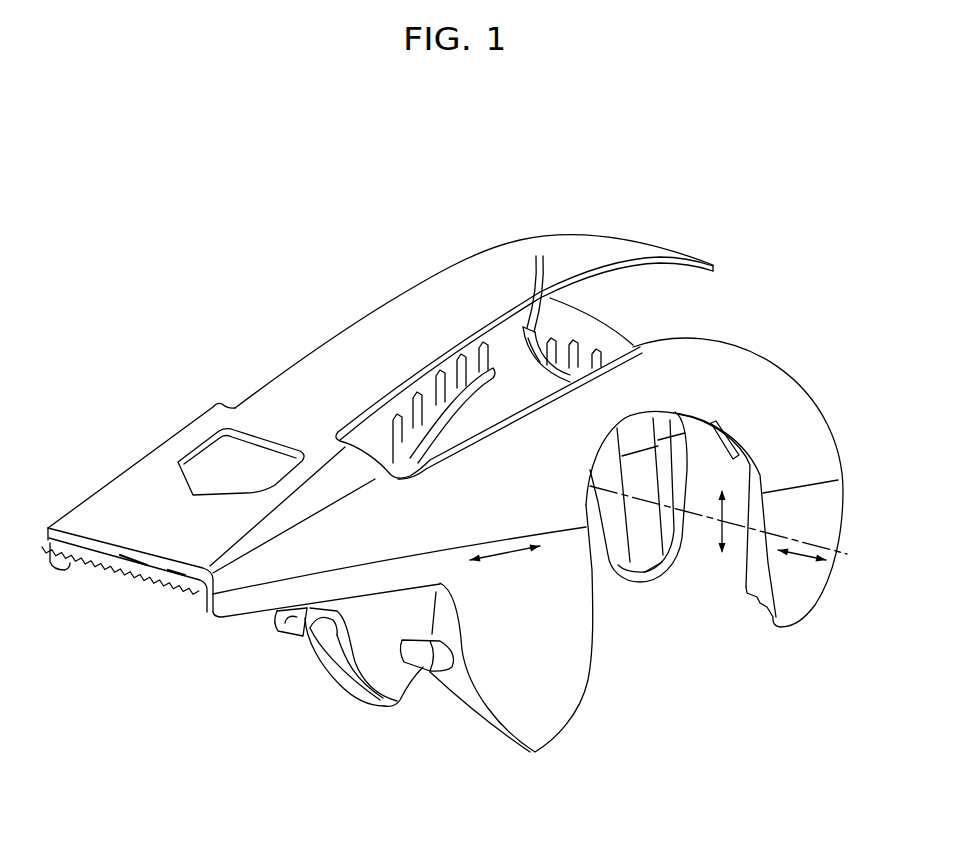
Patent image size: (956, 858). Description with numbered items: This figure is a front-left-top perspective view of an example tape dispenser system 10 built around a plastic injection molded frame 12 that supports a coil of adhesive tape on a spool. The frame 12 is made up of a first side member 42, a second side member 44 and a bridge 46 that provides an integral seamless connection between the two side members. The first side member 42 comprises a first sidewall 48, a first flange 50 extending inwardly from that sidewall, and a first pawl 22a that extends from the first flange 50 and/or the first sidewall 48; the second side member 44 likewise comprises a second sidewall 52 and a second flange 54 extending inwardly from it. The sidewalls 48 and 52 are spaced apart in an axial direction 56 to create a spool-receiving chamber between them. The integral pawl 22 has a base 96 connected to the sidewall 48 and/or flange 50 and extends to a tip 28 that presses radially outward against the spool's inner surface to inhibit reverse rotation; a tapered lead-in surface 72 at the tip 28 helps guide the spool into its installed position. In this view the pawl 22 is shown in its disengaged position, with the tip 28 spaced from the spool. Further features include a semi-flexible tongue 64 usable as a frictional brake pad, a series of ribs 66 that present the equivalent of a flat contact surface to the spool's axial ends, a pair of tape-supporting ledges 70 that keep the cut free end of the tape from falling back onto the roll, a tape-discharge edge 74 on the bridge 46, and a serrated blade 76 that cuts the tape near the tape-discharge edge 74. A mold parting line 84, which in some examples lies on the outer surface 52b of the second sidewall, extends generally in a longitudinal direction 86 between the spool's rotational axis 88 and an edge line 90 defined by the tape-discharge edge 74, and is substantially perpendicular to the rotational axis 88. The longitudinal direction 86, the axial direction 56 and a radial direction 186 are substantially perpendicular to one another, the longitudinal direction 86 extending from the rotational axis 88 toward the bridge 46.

The tape dispenser system 10 is at (208, 247).
The frame 12 is at (145, 452).
The pawl 22 is at (530, 352).
The first pawl 22a is at (519, 340).
The tip 28 is at (520, 305).
The first side member 42 is at (632, 320).
The second side member 44 is at (801, 376).
The bridge 46 is at (130, 527).
The first sidewall 48 is at (590, 310).
The first flange 50 is at (455, 405).
The second sidewall 52 is at (747, 353).
The outer surface 52b is at (573, 603).
The second flange 54 is at (753, 587).
The axial direction 56 is at (800, 557).
The tongue 64 is at (418, 315).
The ribs 66 is at (442, 373).
The tape-supporting ledges 70 is at (420, 643).
The lead-in surface 72 is at (541, 283).
The tape-discharge edge 74 is at (86, 548).
The serrated blade 76 is at (158, 590).
The mold parting line 84 is at (417, 557).
The longitudinal direction 86 is at (507, 556).
The rotational axis 88 is at (701, 516).
The edge line 90 is at (145, 562).
The base 96 is at (737, 465).
The radial direction 186 is at (763, 518).